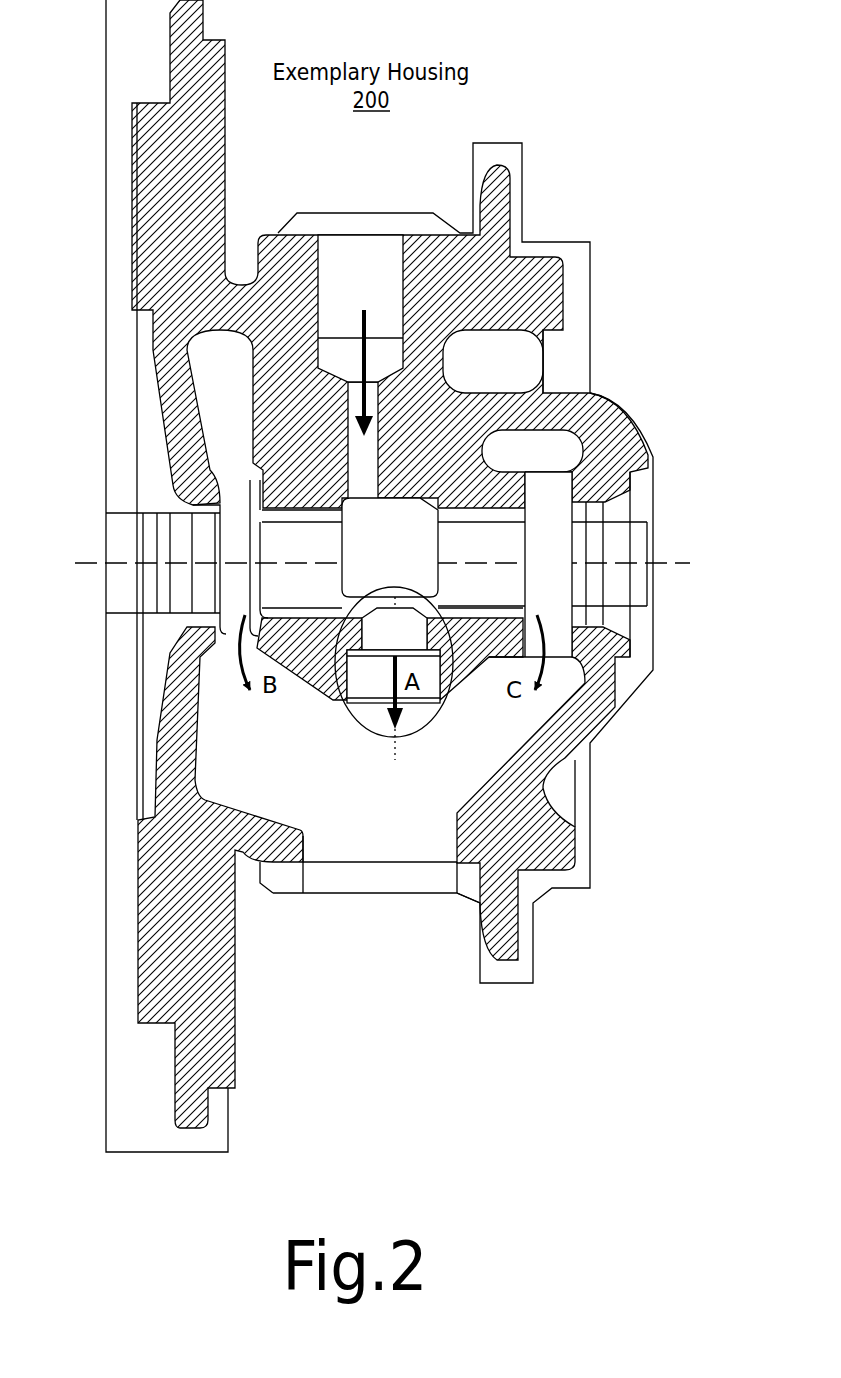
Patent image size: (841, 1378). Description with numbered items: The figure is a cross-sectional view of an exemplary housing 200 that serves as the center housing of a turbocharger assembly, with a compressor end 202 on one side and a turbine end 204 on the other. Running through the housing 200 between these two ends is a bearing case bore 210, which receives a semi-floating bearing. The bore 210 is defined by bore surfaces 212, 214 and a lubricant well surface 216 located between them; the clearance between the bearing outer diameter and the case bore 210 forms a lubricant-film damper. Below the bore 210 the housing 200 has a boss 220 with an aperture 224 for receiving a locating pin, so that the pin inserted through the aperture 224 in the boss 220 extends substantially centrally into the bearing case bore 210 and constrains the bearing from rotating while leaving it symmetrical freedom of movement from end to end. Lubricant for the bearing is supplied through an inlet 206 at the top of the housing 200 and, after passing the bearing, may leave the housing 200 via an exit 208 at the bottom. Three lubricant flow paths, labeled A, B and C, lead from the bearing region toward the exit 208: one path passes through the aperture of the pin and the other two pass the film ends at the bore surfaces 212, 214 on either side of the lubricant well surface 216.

The housing 200 is at (379, 576).
The compressor end 202 is at (99, 547).
The turbine end 204 is at (669, 545).
The inlet 206 is at (345, 214).
The exit 208 is at (370, 914).
The bearing case bore 210 is at (329, 600).
The bore surface 212 is at (323, 511).
The bore surface 214 is at (460, 509).
The lubricant well surface 216 is at (413, 500).
The boss 220 is at (333, 706).
The aperture 224 is at (425, 707).